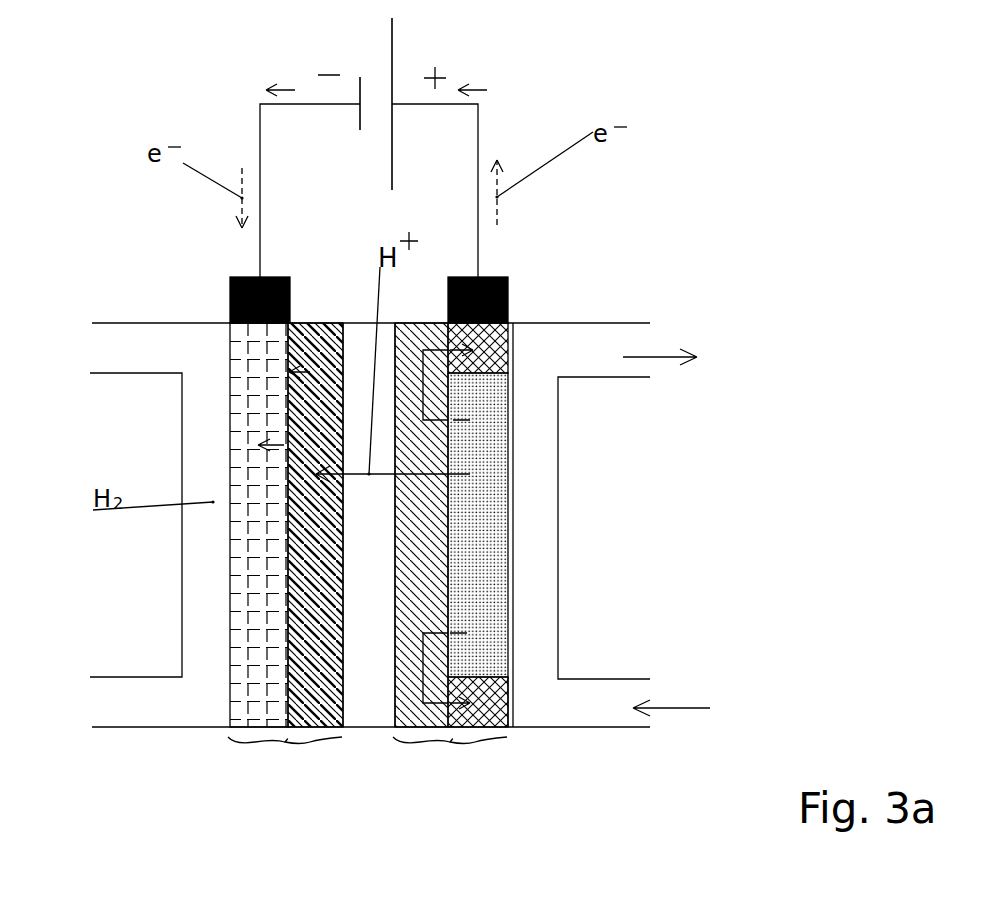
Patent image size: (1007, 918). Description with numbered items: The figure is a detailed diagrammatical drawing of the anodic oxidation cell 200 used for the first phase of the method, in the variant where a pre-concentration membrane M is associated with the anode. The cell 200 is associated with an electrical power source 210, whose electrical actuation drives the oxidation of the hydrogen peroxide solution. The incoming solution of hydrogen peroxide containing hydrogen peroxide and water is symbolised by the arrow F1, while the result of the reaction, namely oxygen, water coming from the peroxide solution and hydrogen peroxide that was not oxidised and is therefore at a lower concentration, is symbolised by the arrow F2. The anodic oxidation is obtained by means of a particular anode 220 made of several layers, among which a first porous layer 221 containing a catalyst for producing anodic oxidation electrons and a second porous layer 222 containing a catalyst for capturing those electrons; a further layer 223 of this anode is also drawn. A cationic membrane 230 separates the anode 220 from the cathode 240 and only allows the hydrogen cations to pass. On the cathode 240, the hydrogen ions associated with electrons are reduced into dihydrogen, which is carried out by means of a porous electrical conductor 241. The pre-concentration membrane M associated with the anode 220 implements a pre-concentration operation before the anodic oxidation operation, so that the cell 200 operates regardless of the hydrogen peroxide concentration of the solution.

The anodic oxidation cell 200 is at (672, 224).
The electrical power source 210 is at (542, 82).
The anode 220 is at (524, 566).
The first porous layer 221 is at (488, 437).
The second porous layer 222 is at (429, 537).
The metal catalyst layer 223 is at (473, 713).
The cationic membrane 230 is at (360, 715).
The cathode 240 is at (255, 566).
The porous electrical conductor 241 is at (222, 767).
The pre-concentration membrane M is at (510, 693).
The arrow F1 (incoming hydrogen peroxide solution) F1 is at (687, 708).
The arrow F2 (reaction products outflow) F2 is at (660, 357).